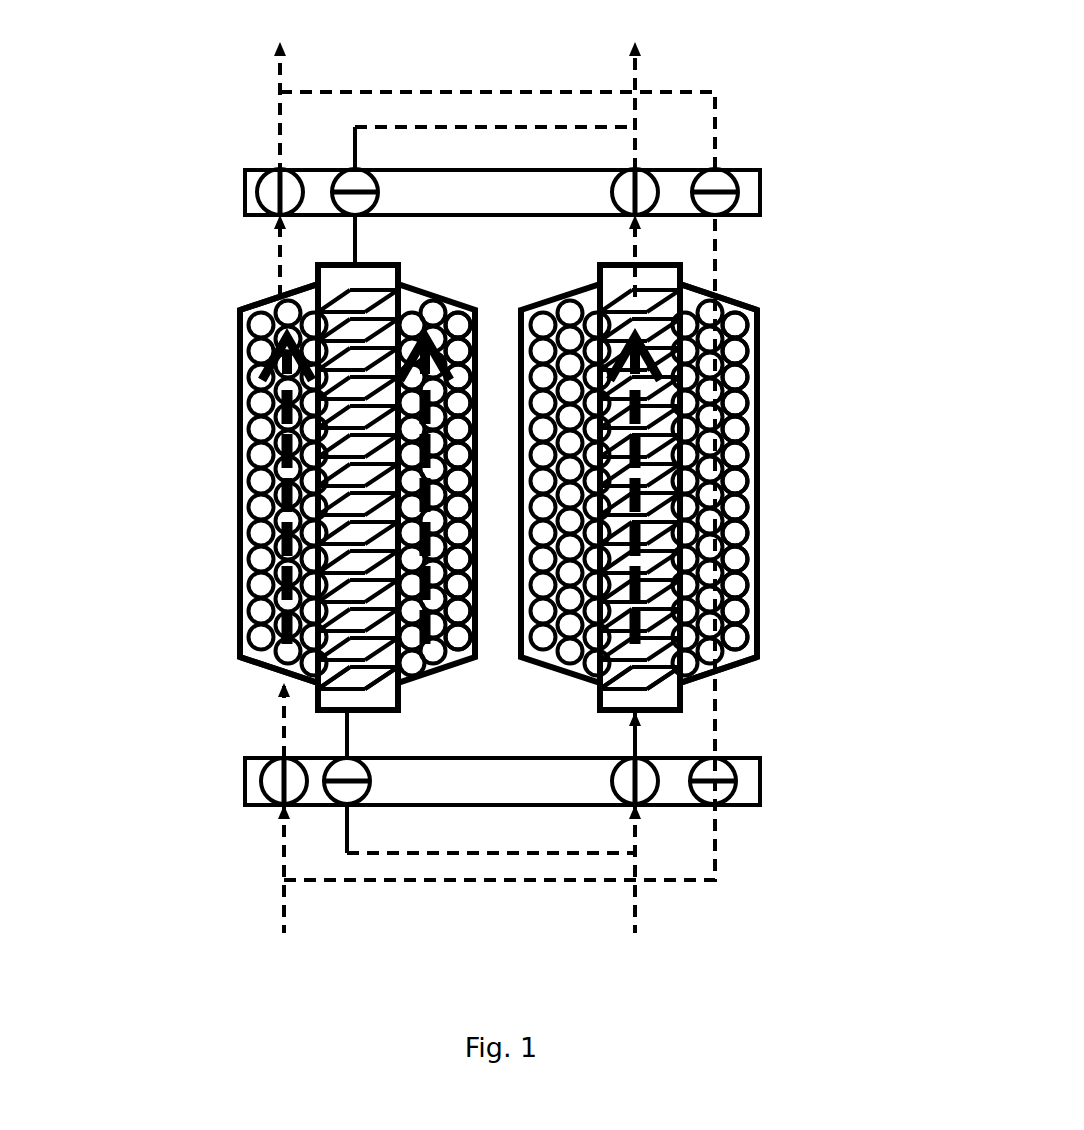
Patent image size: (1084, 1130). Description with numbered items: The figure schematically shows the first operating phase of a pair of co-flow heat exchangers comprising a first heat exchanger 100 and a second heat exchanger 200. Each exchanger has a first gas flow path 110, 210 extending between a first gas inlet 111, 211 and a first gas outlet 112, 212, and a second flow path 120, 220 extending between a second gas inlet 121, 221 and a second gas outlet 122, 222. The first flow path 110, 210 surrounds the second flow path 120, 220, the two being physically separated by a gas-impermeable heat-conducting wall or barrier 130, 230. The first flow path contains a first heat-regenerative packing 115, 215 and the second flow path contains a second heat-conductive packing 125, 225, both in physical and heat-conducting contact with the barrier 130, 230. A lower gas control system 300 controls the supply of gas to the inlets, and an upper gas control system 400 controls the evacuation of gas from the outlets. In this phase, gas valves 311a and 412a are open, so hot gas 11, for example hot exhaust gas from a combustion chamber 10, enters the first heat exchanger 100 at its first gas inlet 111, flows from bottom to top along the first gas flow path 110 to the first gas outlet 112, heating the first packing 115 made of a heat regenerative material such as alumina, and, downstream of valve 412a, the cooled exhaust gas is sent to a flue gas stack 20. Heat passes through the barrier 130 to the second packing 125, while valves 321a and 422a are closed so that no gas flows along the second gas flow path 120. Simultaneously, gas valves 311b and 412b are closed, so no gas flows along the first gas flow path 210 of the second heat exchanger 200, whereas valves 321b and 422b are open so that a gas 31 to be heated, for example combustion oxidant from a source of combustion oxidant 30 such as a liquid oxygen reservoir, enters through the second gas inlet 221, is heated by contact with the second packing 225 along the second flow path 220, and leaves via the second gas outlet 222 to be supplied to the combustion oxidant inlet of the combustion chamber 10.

The combustion chamber 10 is at (462, 488).
The flue gas stack 20 is at (280, 116).
The source of combustion oxidant 30 is at (640, 887).
The hot gas 11 is at (282, 905).
The gas to be heated 31 is at (640, 898).
The first heat exchanger 100 is at (200, 360).
The first gas flow path 110 is at (238, 510).
The first gas inlet 111 is at (275, 685).
The first gas outlet 112 is at (245, 305).
The first heat-regenerative packing 115 is at (445, 318).
The second flow path 120 is at (268, 608).
The second gas inlet 121 is at (345, 716).
The second gas outlet 122 is at (380, 280).
The second heat-conductive packing 125 is at (384, 668).
The gas-impermeable heat-conducting wall or barrier 130 is at (345, 268).
The second heat exchanger 200 is at (805, 360).
The first gas flow path 210 is at (760, 512).
The first gas inlet 211 is at (760, 680).
The first gas outlet 212 is at (755, 300).
The first heat-regenerative packing 215 is at (745, 643).
The second flow path 220 is at (605, 670).
The second gas inlet 221 is at (632, 714).
The second gas outlet 222 is at (612, 290).
The second heat-conductive packing 225 is at (652, 675).
The gas-impermeable heat-conducting wall or barrier 230 is at (666, 295).
The gas control system 300 is at (228, 790).
The gas valve 311a is at (270, 786).
The gas valve 311b is at (722, 790).
The gas valve 321a is at (350, 795).
The gas valve 321b is at (622, 785).
The gas control system 400 is at (228, 199).
The gas valve 412a is at (256, 172).
The gas valve 412b is at (720, 173).
The gas valve 422a is at (362, 178).
The gas valve 422b is at (625, 188).